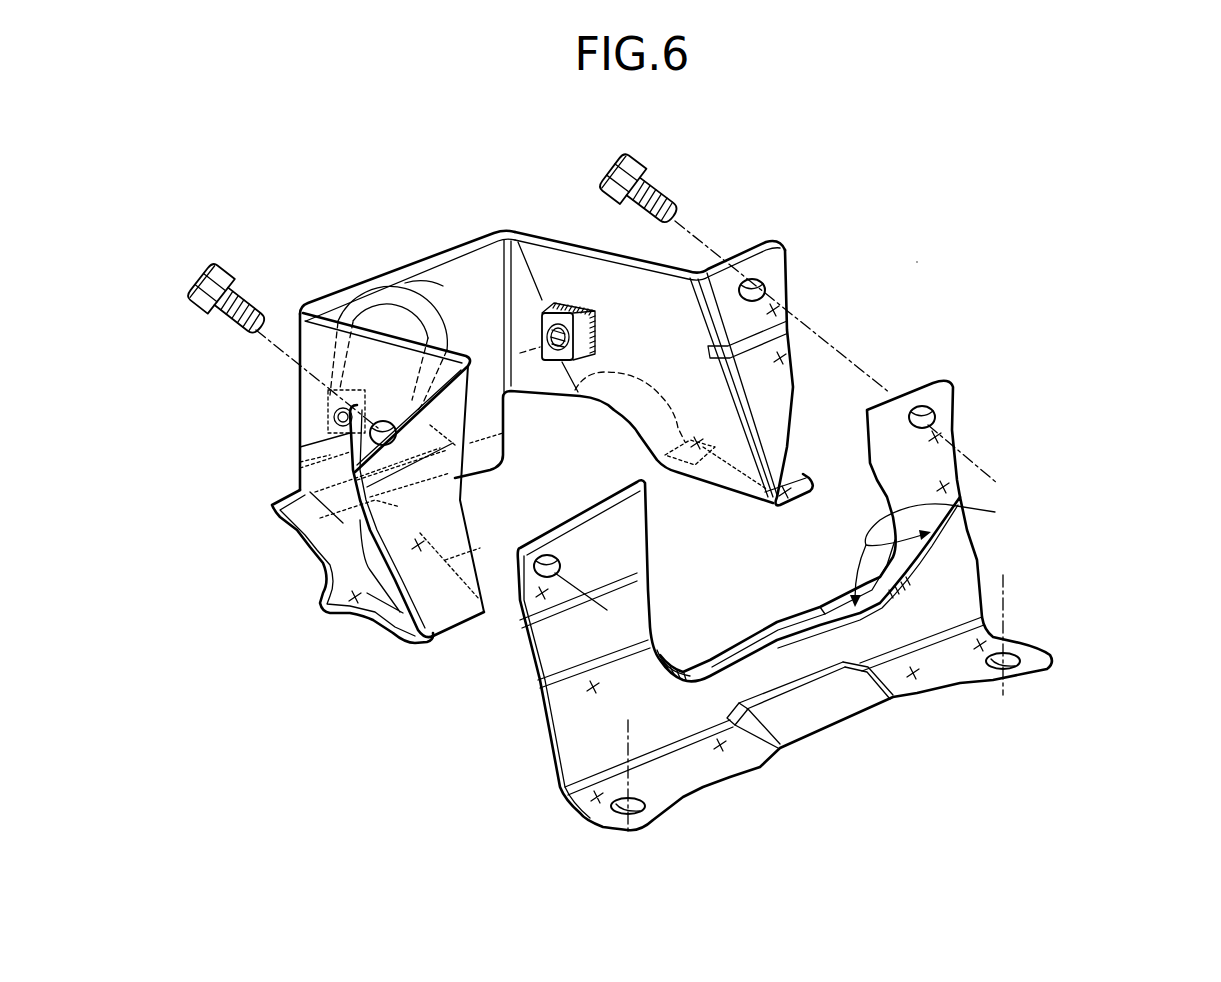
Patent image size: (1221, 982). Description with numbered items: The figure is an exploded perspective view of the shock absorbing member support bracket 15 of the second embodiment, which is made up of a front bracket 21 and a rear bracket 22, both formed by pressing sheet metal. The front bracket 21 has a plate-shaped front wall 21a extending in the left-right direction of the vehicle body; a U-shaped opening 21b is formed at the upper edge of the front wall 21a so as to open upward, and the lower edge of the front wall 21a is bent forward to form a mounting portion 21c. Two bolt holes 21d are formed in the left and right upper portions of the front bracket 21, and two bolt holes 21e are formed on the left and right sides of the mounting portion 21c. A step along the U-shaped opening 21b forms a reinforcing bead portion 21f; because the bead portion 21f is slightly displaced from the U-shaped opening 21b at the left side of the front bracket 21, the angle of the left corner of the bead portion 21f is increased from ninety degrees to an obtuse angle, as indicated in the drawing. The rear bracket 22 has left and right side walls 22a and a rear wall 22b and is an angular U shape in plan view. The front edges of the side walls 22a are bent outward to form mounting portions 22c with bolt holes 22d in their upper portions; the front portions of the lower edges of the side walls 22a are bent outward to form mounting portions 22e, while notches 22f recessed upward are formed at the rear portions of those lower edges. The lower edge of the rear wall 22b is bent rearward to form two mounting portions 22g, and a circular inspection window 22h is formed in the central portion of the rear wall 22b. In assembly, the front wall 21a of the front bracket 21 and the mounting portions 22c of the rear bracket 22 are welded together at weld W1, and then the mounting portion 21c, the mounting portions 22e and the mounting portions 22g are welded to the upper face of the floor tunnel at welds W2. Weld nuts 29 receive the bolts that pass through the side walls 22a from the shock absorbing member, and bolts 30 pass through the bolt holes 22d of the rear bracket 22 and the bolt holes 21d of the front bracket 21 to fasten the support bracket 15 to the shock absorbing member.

The shock absorbing member support bracket 15 is at (924, 256).
The front bracket 21 is at (883, 725).
The front wall 21a is at (767, 660).
The U-shaped opening 21b is at (818, 607).
The mounting portion 21c is at (832, 708).
The bolt hole 21d is at (549, 558).
The bolt hole 21e is at (625, 810).
The bead portion 21f is at (723, 652).
The rear bracket 22 is at (429, 222).
The side wall 22a is at (573, 262).
The rear wall 22b is at (466, 268).
The mounting portion 22c is at (430, 488).
The bolt hole 22d is at (380, 420).
The mounting portion 22e is at (390, 633).
The notch 22f is at (302, 538).
The mounting portion 22g is at (305, 453).
The inspection window 22h is at (392, 306).
The weld nut 29 is at (573, 331).
The bolt 30 is at (220, 266).
The weld W1 is at (788, 358).
The weld W2 is at (353, 596).